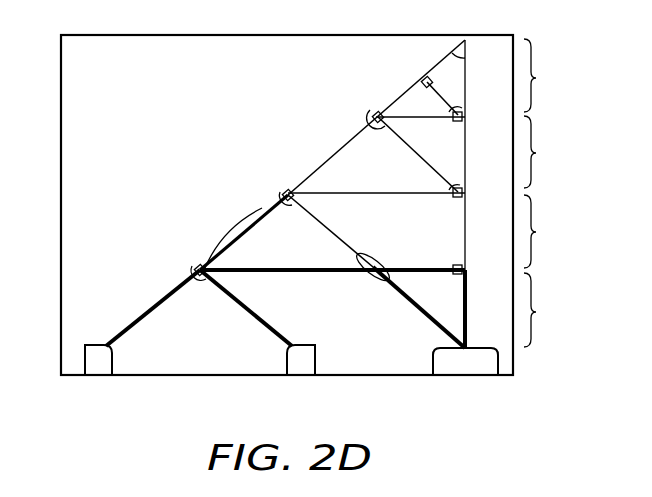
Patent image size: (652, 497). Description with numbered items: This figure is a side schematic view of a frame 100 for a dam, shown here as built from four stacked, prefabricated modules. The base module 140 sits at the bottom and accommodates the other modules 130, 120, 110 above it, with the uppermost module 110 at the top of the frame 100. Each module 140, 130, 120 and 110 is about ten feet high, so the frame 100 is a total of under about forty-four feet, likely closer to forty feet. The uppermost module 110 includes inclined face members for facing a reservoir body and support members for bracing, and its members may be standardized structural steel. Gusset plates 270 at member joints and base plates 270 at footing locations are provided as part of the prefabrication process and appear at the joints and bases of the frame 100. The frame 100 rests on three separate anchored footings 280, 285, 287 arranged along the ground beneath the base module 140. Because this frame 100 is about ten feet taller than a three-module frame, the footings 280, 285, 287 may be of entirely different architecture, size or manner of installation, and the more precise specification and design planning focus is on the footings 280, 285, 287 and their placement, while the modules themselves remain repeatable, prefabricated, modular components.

The frame 100 is at (567, 52).
The uppermost module 110 is at (550, 75).
The module 120 is at (550, 152).
The module 130 is at (550, 231).
The base module 140 is at (550, 310).
The gusset plates and base plates 270 is at (455, 112).
The anchored footing 280 is at (101, 366).
The anchored footing 285 is at (298, 366).
The anchored footing 287 is at (478, 368).